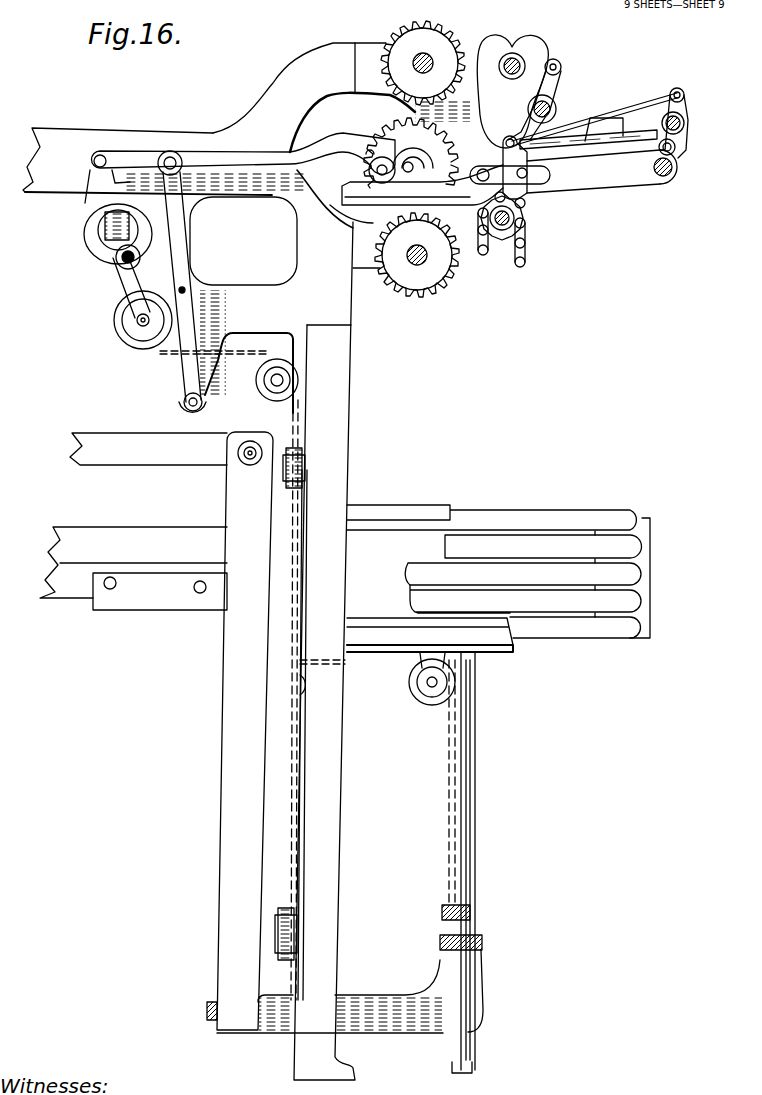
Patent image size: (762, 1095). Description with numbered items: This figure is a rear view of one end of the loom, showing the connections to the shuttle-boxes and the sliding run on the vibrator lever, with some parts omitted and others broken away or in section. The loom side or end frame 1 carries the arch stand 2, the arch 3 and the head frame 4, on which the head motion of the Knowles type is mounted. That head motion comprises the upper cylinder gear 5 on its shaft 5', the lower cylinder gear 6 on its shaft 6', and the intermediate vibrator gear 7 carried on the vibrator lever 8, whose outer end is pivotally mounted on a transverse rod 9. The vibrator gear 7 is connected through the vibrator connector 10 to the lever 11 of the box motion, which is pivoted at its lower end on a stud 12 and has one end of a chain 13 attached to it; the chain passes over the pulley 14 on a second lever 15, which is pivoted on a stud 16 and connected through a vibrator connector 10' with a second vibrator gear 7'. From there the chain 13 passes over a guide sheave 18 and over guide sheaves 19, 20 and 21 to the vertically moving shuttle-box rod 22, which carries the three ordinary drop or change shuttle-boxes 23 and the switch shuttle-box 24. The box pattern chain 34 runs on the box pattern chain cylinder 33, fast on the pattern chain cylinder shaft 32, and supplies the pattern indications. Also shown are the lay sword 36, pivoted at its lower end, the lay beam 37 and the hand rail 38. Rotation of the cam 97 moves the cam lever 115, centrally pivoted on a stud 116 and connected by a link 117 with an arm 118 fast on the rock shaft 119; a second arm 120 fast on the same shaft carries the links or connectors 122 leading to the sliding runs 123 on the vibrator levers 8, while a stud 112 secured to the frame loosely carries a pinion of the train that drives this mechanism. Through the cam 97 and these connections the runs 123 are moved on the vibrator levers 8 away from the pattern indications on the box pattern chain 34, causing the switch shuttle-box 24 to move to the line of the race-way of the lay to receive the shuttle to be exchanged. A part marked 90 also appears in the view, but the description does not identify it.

The loom side or end frame 1 is at (337, 441).
The arch stand 2 is at (343, 318).
The arch 3 is at (55, 133).
The head frame 4 is at (374, 50).
The upper cylinder gear 5 is at (428, 57).
The shaft of the upper cylinder gear 5' is at (410, 36).
The lower cylinder gear 6 is at (417, 274).
The shaft of the lower cylinder gear 6' is at (443, 281).
The intermediate vibrator gear 7 is at (409, 141).
The second vibrator gear 7' is at (355, 135).
The vibrator lever 8 is at (353, 196).
The transverse rod 9 is at (673, 176).
The vibrator connector 10 is at (253, 152).
The vibrator connector 10' is at (139, 137).
The lever of the box motion 11 is at (180, 259).
The stud 12 is at (183, 406).
The chain 13 is at (165, 353).
The pulley 14 is at (130, 331).
The second lever 15 is at (100, 199).
The stud 16 is at (123, 259).
The guide sheave 18 is at (261, 386).
The guide sheave 19 is at (301, 480).
The guide sheave 20 is at (300, 690).
The guide sheave 21 is at (419, 695).
The shuttle-box rod 22 is at (468, 831).
The drop or change shuttle-boxes 23 is at (597, 562).
The switch shuttle-box 24 is at (497, 513).
The pattern chain cylinder shaft 32 is at (527, 234).
The box pattern chain cylinder 33 is at (512, 236).
The box pattern chain 34 is at (526, 212).
The lay sword 36 is at (230, 815).
The lay beam 37 is at (73, 598).
The hand rail 38 is at (108, 442).
The cam hub 90 is at (504, 71).
The cam 97 is at (531, 47).
The stud 112 is at (598, 139).
The cam lever 115 is at (556, 86).
The stud 116 is at (549, 109).
The link 117 is at (588, 139).
The arm 118 is at (676, 147).
The rock shaft 119 is at (684, 125).
The second arm 120 is at (685, 97).
The links or connectors 122 is at (640, 103).
The sliding runs 123 is at (520, 184).